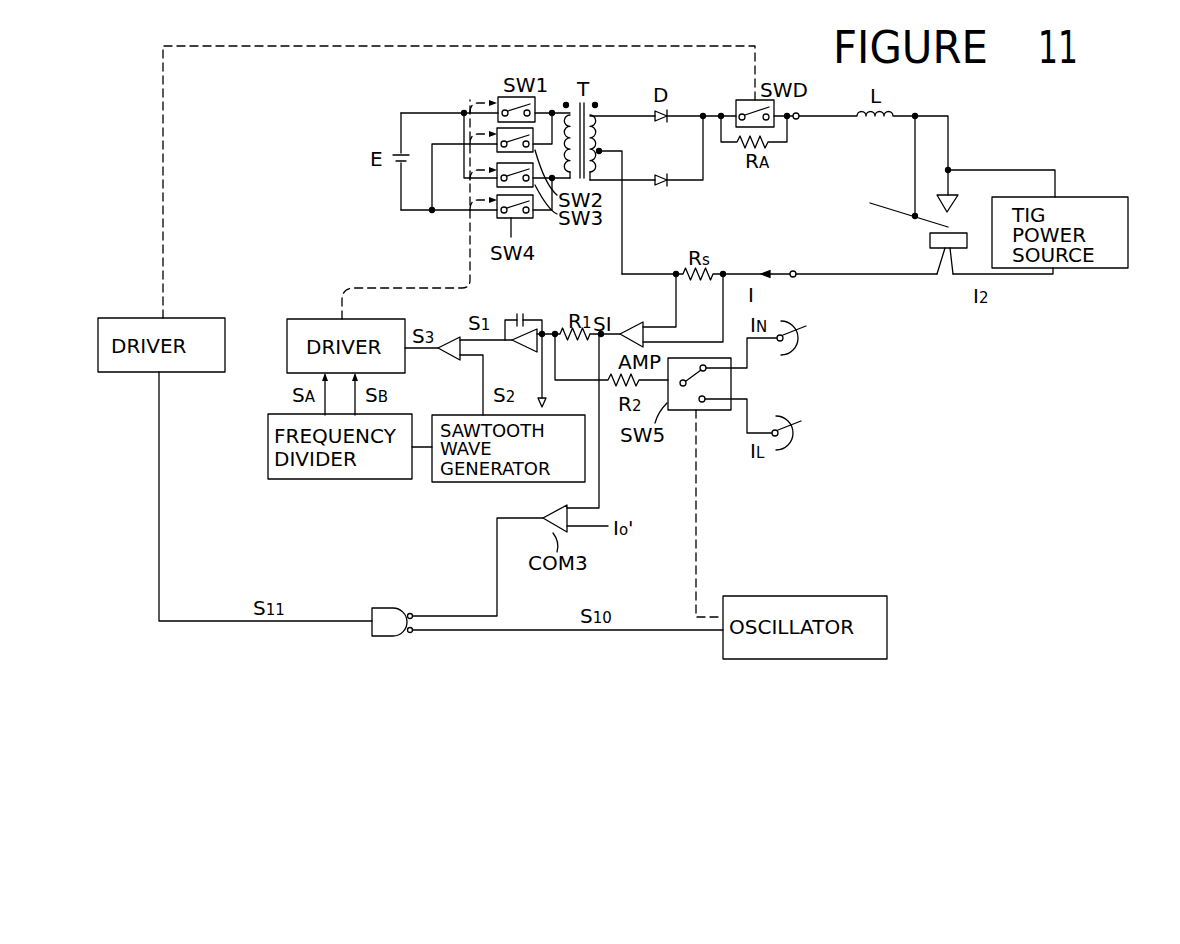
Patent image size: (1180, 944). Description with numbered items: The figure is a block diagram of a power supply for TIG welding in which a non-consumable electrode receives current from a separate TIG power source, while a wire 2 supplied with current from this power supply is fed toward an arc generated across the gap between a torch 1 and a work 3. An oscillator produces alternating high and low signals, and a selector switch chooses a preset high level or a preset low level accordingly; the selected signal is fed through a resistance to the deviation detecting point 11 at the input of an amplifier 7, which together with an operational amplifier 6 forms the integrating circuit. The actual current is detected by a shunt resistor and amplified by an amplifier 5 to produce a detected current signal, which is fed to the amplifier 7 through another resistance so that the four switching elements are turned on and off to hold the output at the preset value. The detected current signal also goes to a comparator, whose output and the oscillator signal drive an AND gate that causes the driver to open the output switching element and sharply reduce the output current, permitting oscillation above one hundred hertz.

The torch 1 is at (958, 200).
The wire 2 is at (902, 217).
The work 3 is at (967, 239).
The amplifier 5 is at (635, 322).
The operational amplifier 6 is at (448, 357).
The amplifier 7 is at (553, 325).
The deviation detecting point 11 is at (557, 340).